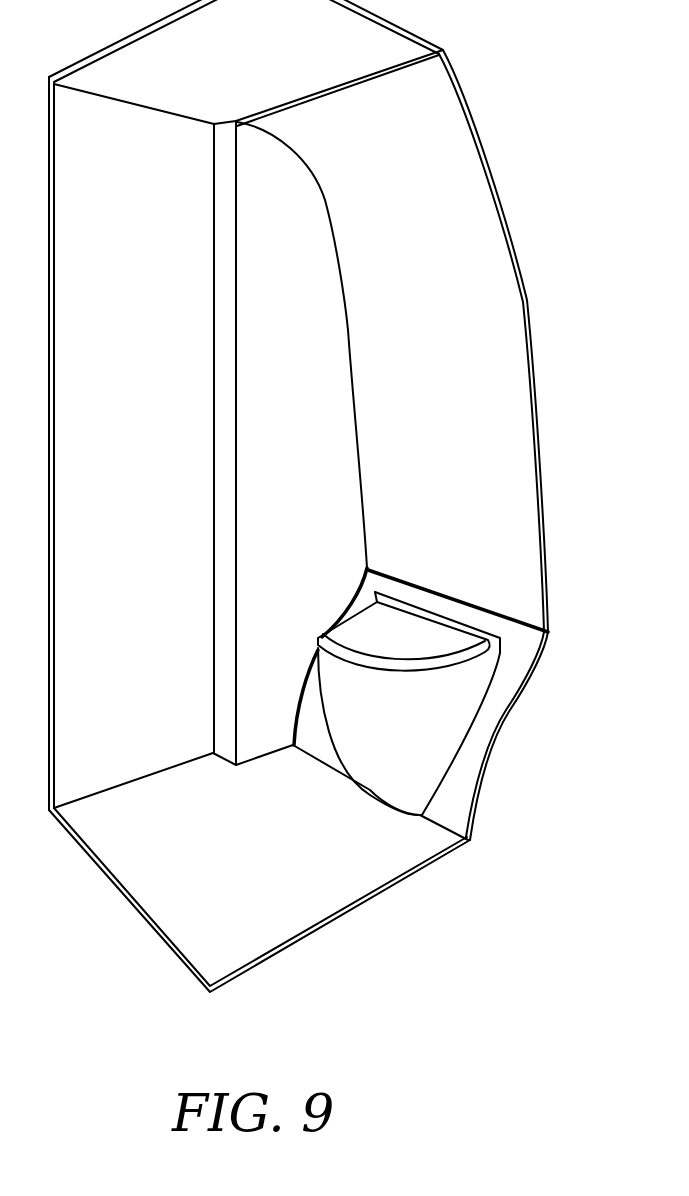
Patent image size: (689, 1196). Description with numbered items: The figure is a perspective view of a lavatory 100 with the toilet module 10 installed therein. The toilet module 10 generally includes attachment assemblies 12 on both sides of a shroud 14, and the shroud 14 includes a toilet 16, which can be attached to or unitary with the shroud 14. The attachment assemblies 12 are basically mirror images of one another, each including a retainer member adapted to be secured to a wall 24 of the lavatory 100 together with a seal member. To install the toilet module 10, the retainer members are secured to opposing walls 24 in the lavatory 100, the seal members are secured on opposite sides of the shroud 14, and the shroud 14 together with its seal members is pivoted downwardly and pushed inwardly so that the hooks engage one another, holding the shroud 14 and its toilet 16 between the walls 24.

The lavatory 100 is at (448, 107).
The toilet module 10 is at (518, 587).
The attachment assembly 12 is at (292, 693).
The shroud 14 is at (497, 682).
The toilet 16 is at (352, 805).
The wall 24 is at (293, 619).